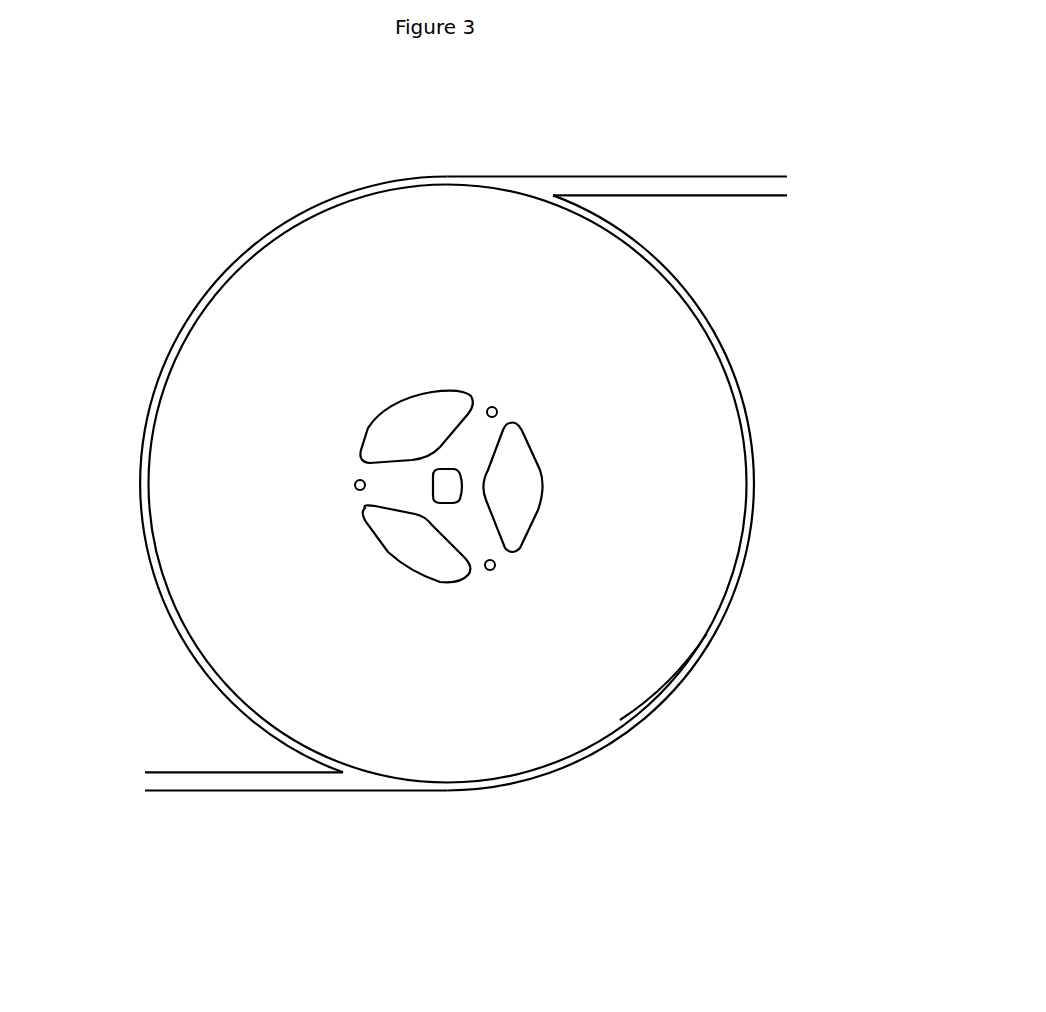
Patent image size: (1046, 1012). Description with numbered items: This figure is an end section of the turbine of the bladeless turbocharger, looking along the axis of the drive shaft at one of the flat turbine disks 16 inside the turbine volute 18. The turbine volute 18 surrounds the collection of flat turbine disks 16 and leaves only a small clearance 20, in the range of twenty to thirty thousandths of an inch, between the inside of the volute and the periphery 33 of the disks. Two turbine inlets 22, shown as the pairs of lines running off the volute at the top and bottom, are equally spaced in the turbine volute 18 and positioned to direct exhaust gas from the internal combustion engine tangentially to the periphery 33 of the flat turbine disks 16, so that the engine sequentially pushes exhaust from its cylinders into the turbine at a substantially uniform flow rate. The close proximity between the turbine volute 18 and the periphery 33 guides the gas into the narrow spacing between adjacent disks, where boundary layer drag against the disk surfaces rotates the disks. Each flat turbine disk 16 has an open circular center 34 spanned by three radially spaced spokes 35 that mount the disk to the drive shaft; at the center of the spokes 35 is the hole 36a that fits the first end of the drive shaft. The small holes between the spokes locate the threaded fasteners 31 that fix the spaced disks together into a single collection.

The flat turbine disk 16 is at (660, 377).
The turbine volute 18 is at (757, 481).
The clearance 20 is at (588, 755).
The turbine inlet 22 is at (722, 183).
The threaded fastener 31 is at (497, 565).
The periphery 33 is at (660, 677).
The open circular center 34 is at (390, 543).
The radially spaced spokes 35 is at (477, 542).
The hole 36a is at (437, 483).